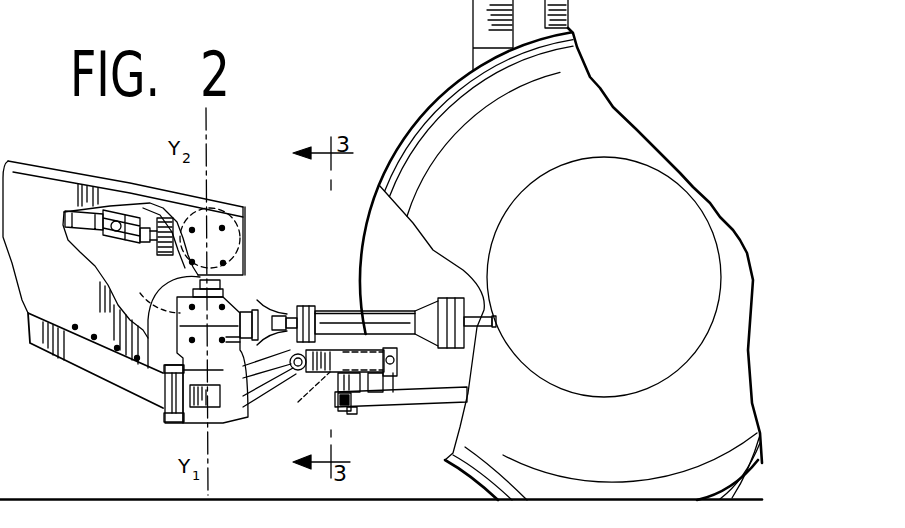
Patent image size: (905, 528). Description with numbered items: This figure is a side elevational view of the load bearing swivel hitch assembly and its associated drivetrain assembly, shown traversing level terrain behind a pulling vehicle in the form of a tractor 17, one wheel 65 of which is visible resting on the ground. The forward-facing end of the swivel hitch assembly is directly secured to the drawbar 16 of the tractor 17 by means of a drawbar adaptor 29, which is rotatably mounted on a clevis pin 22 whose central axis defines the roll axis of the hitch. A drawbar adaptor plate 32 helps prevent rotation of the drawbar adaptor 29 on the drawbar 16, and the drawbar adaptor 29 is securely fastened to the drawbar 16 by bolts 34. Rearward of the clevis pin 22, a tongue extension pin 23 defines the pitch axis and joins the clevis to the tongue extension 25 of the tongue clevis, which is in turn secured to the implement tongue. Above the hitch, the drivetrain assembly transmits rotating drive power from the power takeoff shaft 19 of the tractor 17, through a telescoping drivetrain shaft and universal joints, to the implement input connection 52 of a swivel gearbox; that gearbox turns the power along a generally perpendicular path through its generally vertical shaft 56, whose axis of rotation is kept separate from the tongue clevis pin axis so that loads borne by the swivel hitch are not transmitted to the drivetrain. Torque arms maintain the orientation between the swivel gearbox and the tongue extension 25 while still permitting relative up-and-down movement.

The drawbar 16 is at (447, 400).
The tractor 17 is at (488, 42).
The power takeoff shaft 19 is at (480, 300).
The clevis pin 22 is at (294, 371).
The tongue extension pin 23 is at (294, 371).
The tongue extension 25 is at (201, 419).
The drawbar adaptor 29 is at (340, 408).
The drawbar adaptor plate 32 is at (400, 382).
The bolts 34 is at (376, 408).
The implement input connection 52 is at (262, 307).
The vertical shaft 56 is at (157, 307).
The wheel 65 is at (595, 97).